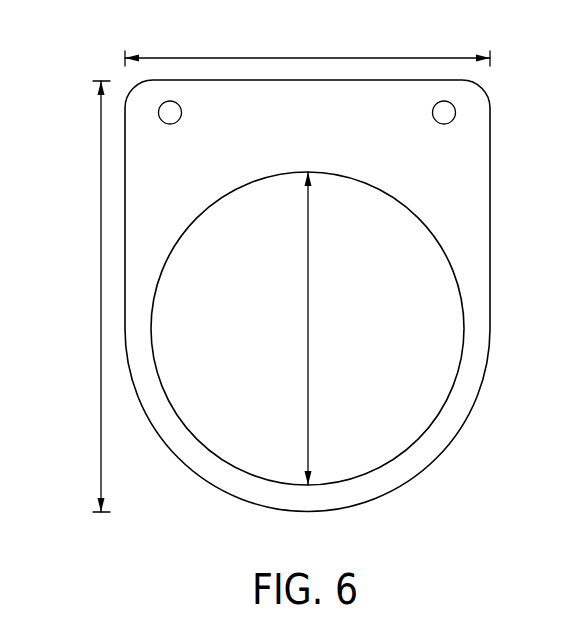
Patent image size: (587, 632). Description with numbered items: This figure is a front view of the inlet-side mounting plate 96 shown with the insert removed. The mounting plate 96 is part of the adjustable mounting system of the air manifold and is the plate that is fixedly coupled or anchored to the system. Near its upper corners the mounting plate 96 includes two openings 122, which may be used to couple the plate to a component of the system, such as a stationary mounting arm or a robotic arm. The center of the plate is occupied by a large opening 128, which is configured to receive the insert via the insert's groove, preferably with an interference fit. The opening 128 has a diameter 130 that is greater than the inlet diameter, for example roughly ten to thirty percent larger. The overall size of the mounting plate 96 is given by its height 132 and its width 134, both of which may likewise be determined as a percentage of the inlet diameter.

The inlet-side mounting plate 96 is at (499, 93).
The openings 122 is at (167, 117).
The opening 128 is at (243, 179).
The diameter 130 is at (308, 328).
The height 132 is at (101, 296).
The width 134 is at (310, 56).